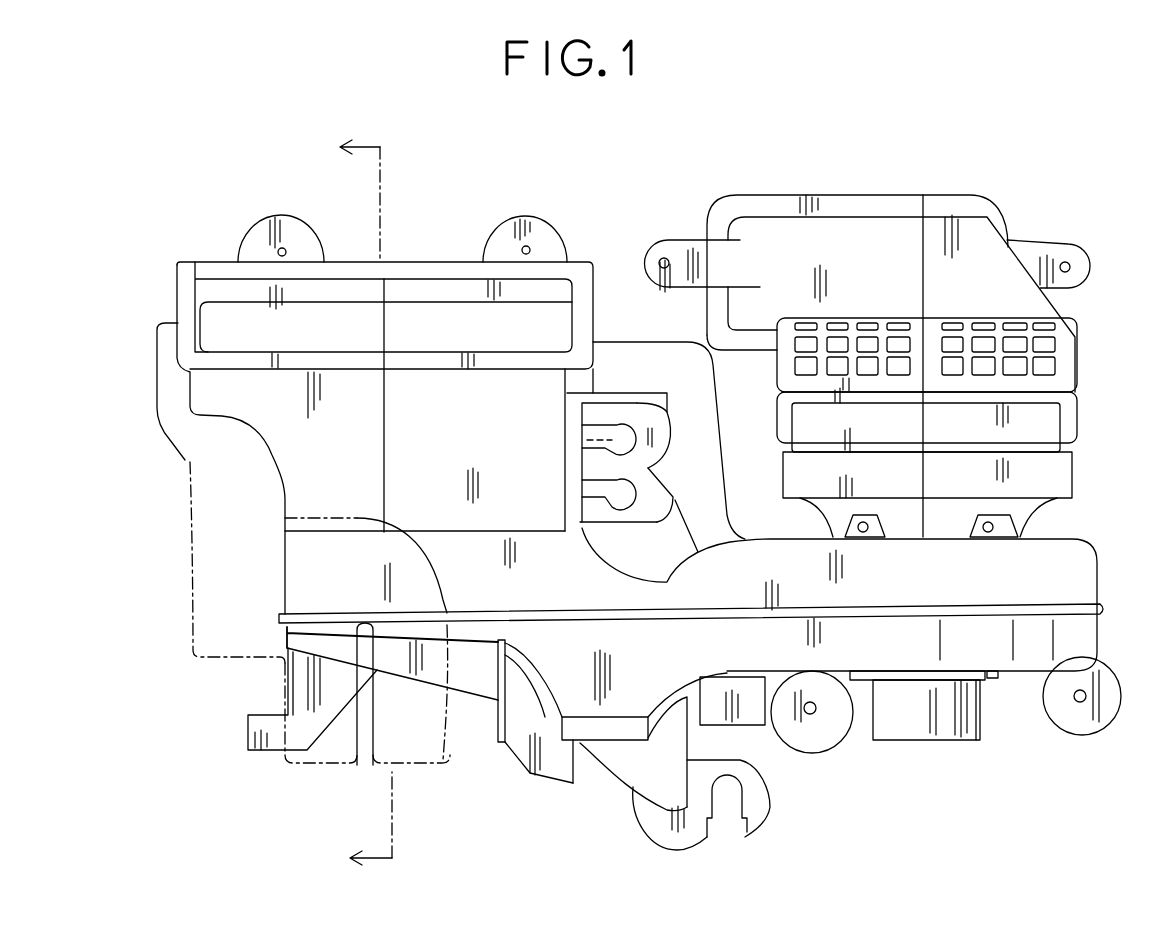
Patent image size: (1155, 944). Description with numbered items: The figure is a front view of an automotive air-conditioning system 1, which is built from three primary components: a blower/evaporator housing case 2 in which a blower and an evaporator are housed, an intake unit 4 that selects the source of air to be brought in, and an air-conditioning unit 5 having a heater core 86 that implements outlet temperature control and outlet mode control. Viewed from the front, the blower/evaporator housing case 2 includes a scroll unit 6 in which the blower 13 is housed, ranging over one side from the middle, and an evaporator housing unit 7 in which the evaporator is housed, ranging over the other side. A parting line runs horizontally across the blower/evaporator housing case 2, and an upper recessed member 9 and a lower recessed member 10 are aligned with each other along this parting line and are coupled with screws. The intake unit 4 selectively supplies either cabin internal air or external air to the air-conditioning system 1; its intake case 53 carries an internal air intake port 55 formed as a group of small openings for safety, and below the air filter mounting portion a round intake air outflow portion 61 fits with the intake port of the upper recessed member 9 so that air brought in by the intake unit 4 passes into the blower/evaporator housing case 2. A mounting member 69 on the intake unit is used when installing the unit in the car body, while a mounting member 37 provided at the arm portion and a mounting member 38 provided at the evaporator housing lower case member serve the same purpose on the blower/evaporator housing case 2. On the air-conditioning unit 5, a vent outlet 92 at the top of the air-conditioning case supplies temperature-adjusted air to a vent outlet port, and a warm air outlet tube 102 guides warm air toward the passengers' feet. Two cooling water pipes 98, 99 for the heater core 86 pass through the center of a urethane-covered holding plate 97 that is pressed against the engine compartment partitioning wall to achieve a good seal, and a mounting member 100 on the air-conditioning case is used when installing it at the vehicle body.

The air-conditioning system 1 is at (165, 237).
The blower/evaporator housing case 2 is at (255, 598).
The intake unit 4 is at (946, 184).
The air-conditioning unit 5 is at (228, 451).
The scroll unit 6 is at (1075, 578).
The evaporator housing unit 7 is at (300, 563).
The upper recessed member 9 is at (483, 597).
The lower recessed member 10 is at (623, 697).
The blower 13 is at (925, 727).
The mounting member 37 is at (832, 752).
The mounting member 38 is at (1082, 723).
The intake case 53 is at (1037, 430).
The internal air intake port 55 is at (1040, 345).
The intake air outflow portion 61 is at (950, 523).
The mounting member 69 is at (668, 243).
The heater core 86 is at (578, 532).
The vent outlet 92 is at (217, 334).
The holding plate 97 is at (657, 420).
The cooling water pipe 98 is at (623, 435).
The cooling water pipe 99 is at (633, 493).
The mounting member 100 is at (255, 232).
The warm air outlet tube 102 is at (335, 770).